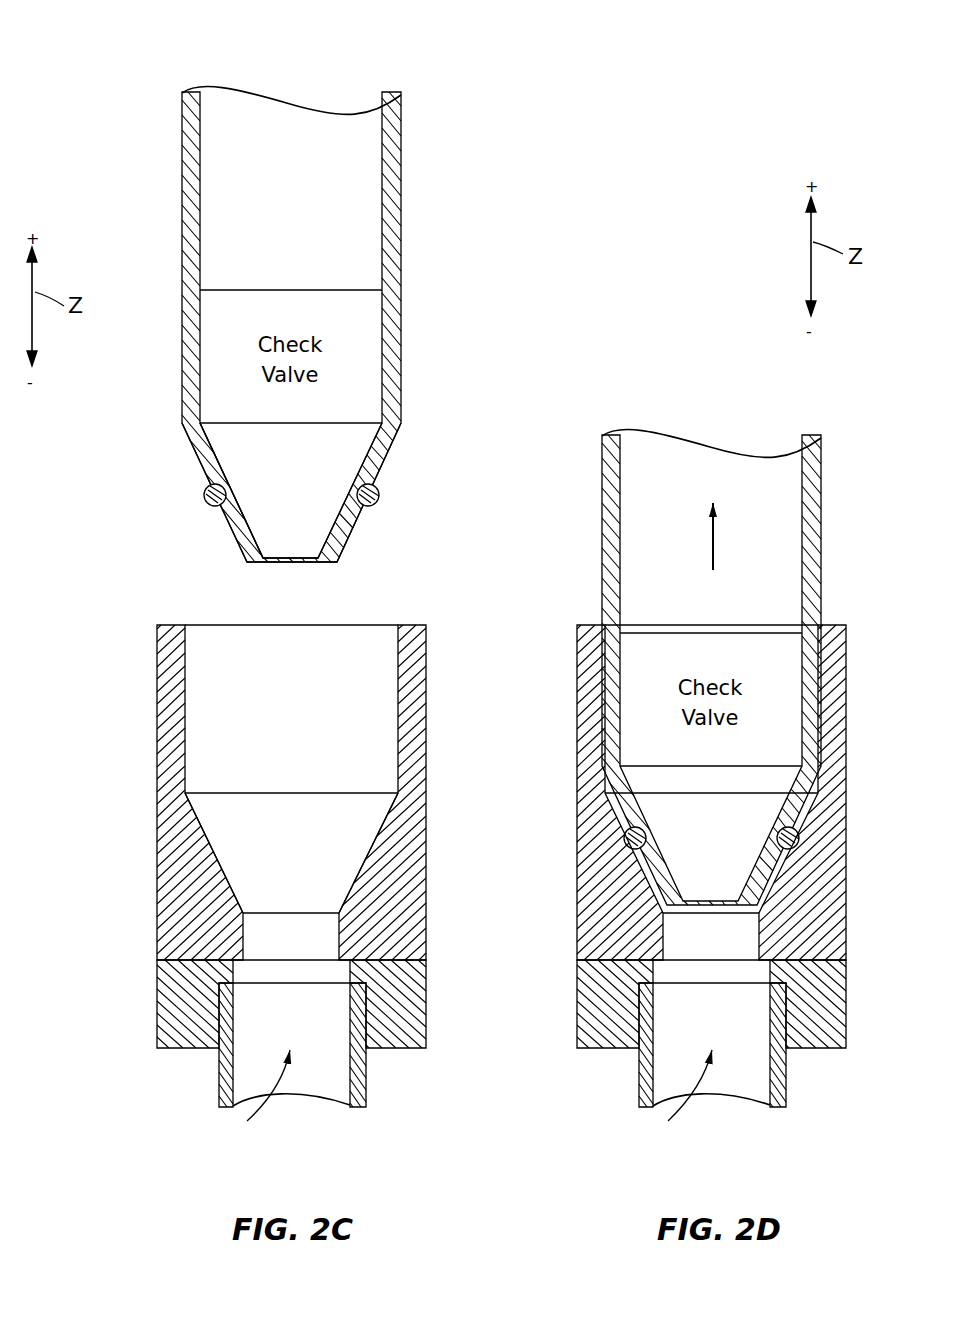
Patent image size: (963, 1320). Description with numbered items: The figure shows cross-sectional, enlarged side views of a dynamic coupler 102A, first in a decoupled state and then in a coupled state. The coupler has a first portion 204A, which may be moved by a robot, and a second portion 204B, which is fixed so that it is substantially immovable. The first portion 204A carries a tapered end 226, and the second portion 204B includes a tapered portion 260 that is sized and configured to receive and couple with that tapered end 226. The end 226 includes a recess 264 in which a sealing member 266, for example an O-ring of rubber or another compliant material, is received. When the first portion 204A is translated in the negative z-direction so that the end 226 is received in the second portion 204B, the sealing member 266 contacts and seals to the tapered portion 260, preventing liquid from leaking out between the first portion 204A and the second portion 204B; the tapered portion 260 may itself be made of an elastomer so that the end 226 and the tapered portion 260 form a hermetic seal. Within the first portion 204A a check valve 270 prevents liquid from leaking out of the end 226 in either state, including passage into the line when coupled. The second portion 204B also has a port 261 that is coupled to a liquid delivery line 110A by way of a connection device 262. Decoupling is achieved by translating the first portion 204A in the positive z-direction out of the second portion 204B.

In FIG. 2C, the dynamic coupler 102A is at (309, 296).
In FIG. 2D, the dynamic coupler 102A is at (758, 626).
In FIG. 2C, the first portion 204A is at (309, 324).
In FIG. 2D, the first portion 204A is at (769, 667).
In FIG. 2C, the check valve 270 is at (386, 355).
In FIG. 2D, the check valve 270 is at (810, 675).
In FIG. 2C, the tapered end 226 is at (392, 471).
In FIG. 2C, the recess 264 is at (226, 488).
In FIG. 2C, the sealing member 266 is at (206, 494).
In FIG. 2D, the sealing member 266 is at (798, 834).
In FIG. 2C, the second portion 204B is at (228, 792).
In FIG. 2D, the second portion 204B is at (577, 746).
In FIG. 2C, the tapered portion 260 is at (220, 864).
In FIG. 2C, the connection device 262 is at (426, 1003).
In FIG. 2D, the connection device 262 is at (846, 1005).
In FIG. 2C, the port 261 is at (239, 1101).
In FIG. 2D, the port 261 is at (660, 1101).
In FIG. 2C, the liquid delivery line 110A is at (366, 1083).
In FIG. 2D, the liquid delivery line 110A is at (786, 1083).